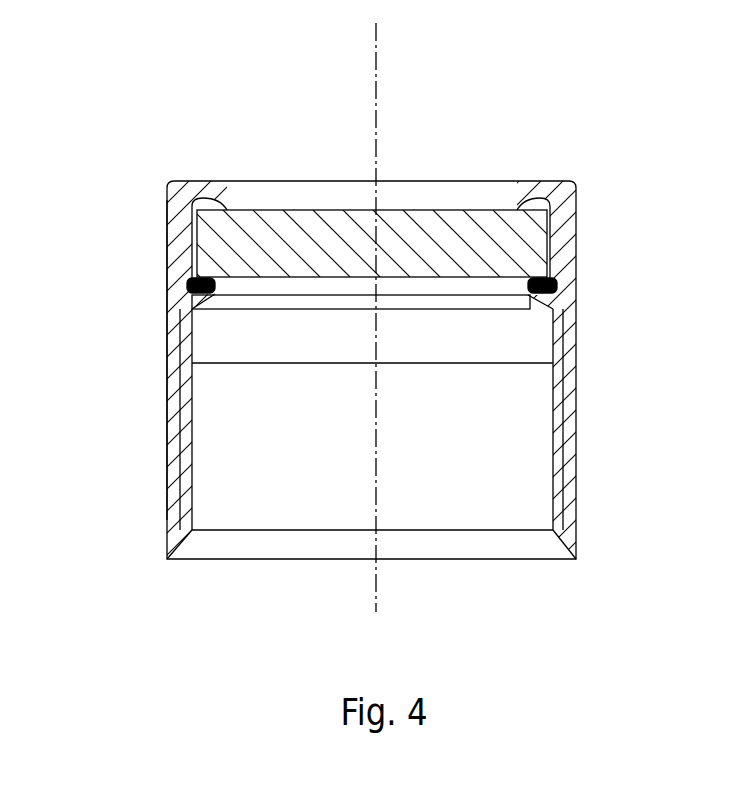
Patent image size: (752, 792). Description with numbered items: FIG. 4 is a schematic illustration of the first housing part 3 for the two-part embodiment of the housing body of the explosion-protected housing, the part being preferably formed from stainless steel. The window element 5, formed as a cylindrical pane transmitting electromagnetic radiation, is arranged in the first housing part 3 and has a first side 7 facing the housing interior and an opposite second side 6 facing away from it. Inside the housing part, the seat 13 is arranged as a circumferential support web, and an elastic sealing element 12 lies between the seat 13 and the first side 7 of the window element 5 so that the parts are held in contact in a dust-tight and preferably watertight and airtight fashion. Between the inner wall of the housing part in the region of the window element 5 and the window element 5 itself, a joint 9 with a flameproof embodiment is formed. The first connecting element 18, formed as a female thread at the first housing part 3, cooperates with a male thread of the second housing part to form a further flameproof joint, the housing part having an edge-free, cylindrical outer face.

The first housing part 3 is at (577, 133).
The window element 5 is at (275, 223).
The second side 6 is at (412, 210).
The first side 7 is at (262, 285).
The joint 9 is at (167, 263).
The elastic sealing element 12 is at (555, 277).
The seat 13 is at (167, 340).
The first connecting element 18 is at (183, 486).